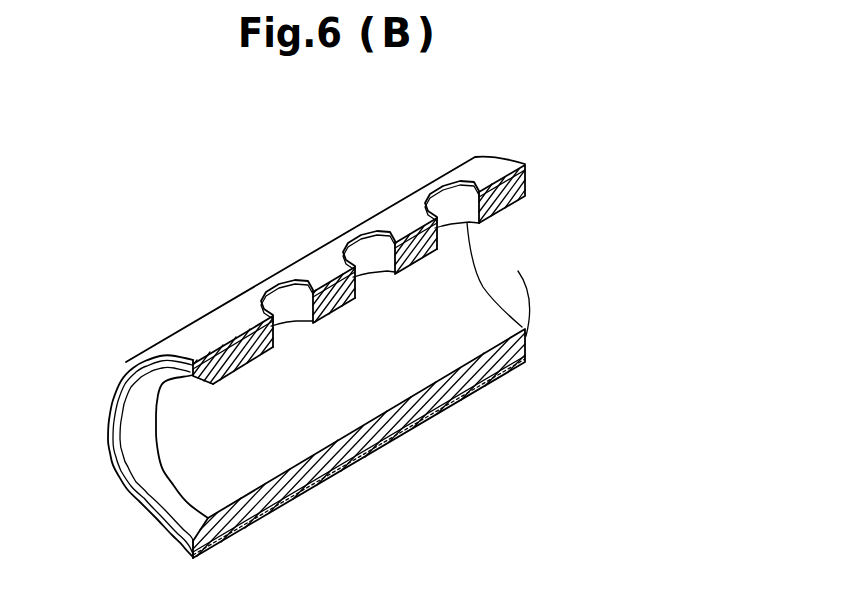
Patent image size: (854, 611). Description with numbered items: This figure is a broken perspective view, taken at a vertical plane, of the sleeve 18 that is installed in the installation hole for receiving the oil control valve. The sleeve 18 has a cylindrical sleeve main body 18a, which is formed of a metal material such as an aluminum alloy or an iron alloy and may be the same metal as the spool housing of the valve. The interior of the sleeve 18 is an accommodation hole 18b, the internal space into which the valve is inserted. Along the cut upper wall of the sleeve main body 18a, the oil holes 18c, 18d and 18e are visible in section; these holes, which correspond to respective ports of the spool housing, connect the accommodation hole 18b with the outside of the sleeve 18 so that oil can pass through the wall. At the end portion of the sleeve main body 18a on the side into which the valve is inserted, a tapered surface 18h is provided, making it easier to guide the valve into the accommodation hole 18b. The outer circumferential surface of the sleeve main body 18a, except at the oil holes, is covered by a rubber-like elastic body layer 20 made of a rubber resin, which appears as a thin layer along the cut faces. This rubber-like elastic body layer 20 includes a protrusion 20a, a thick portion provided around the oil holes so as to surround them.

The sleeve 18 is at (245, 192).
The sleeve main body 18a is at (333, 248).
The accommodation hole 18b is at (192, 482).
The oil hole 18c is at (287, 305).
The oil hole 18d is at (372, 253).
The oil hole 18e is at (455, 207).
The tapered surface 18h is at (147, 462).
The rubber-like elastic body layer 20 is at (193, 338).
The protrusion 20a is at (491, 166).